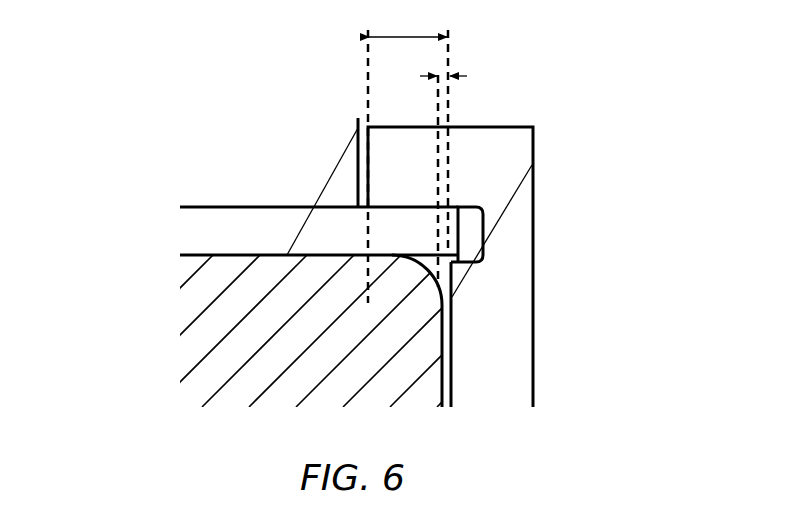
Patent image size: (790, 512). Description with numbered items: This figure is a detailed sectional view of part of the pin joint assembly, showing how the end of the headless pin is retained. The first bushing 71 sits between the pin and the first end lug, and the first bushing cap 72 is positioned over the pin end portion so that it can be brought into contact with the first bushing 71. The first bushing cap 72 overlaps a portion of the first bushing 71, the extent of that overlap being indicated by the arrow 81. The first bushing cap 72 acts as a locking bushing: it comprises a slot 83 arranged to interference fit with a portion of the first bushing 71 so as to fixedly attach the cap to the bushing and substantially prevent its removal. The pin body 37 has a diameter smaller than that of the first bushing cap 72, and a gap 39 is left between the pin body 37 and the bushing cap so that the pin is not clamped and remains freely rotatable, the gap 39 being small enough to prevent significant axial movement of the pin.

The pin body 37 is at (196, 292).
The first bushing 71 is at (207, 220).
The first bushing cap 72 is at (517, 357).
The slot 83 is at (488, 222).
The arrow indicating overlap 81 is at (358, 43).
The gap 39 is at (467, 73).